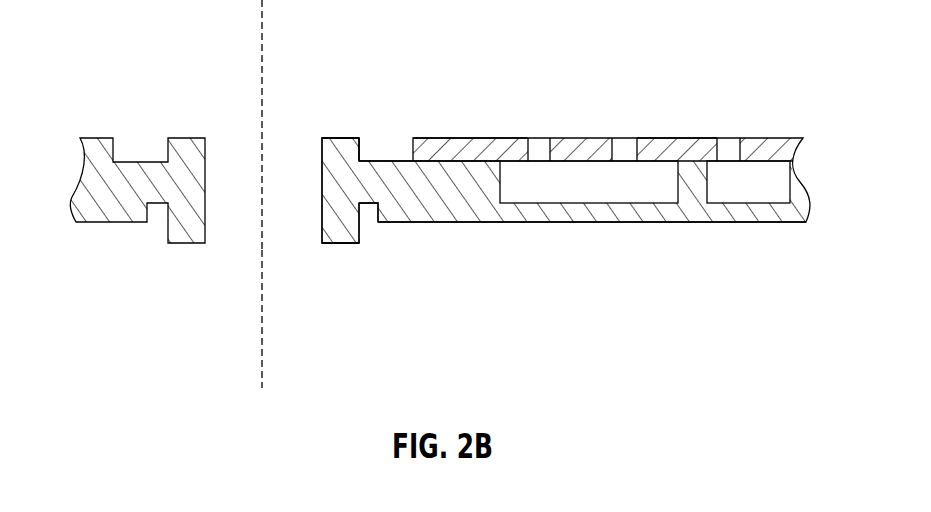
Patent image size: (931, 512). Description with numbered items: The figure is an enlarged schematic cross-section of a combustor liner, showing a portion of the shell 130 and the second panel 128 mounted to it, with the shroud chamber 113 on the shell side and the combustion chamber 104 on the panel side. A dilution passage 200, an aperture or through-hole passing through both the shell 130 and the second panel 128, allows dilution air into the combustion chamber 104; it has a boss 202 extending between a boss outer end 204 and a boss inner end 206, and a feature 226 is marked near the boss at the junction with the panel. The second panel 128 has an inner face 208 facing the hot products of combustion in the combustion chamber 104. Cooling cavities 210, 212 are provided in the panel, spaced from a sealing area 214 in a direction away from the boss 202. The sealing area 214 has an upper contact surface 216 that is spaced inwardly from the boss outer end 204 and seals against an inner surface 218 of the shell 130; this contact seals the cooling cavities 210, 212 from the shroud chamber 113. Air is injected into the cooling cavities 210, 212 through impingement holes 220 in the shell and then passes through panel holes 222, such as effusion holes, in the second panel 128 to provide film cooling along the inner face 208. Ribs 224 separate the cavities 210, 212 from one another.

The shroud chamber 113 is at (257, 27).
The combustion chamber 104 is at (257, 360).
The dilution passage 200 is at (257, 207).
The second panel 128 is at (490, 223).
The shell 130 is at (517, 138).
The boss 202 is at (340, 170).
The boss outer end 204 is at (357, 141).
The inner corner 226 is at (360, 157).
The boss inner end 206 is at (342, 244).
The inner face 208 is at (387, 223).
The inner surface 218 is at (407, 178).
The sealing area 214 is at (436, 165).
The upper contact surface 216 is at (473, 160).
The impingement holes 220 is at (628, 137).
The ribs 224 is at (663, 150).
The cooling cavity 210 is at (613, 193).
The cooling cavity 212 is at (767, 170).
The panel holes 222 is at (557, 223).